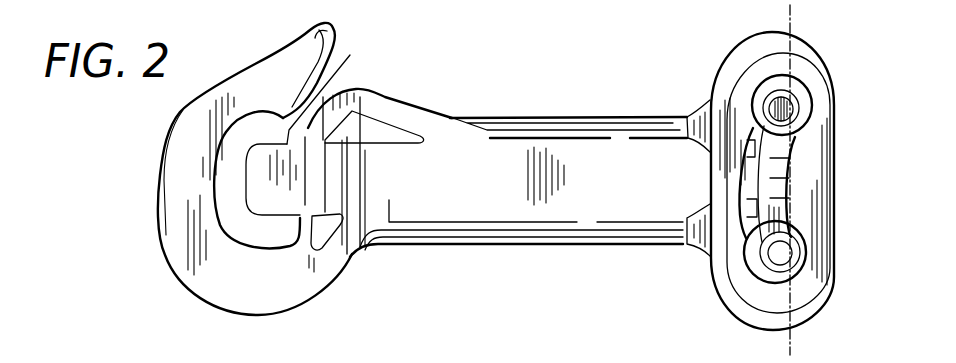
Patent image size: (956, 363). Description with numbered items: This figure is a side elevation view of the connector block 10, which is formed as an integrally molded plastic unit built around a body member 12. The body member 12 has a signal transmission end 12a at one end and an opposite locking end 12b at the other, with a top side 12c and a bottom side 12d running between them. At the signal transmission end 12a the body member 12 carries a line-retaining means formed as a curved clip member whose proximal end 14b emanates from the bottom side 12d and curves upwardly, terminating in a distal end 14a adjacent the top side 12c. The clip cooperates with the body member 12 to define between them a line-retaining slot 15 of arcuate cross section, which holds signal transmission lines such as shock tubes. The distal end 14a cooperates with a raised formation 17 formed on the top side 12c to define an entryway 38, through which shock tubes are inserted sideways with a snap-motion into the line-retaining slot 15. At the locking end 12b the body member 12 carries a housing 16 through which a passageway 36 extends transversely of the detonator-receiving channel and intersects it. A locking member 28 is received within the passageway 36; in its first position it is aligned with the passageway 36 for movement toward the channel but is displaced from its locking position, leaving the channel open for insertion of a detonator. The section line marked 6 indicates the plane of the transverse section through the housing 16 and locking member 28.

The connector block 10 is at (551, 263).
The body member 12 is at (479, 104).
The signal transmission end 12a is at (149, 227).
The locking end 12b is at (719, 314).
The top side 12c is at (593, 117).
The bottom side 12d is at (583, 246).
The distal end 14a is at (315, 40).
The proximal end 14b is at (308, 268).
The line-retaining slot 15 is at (231, 190).
The housing 16 is at (808, 46).
The raised formation 17 is at (360, 90).
The locking member 28 is at (763, 185).
The passageway 36 is at (808, 110).
The entryway 38 is at (397, 40).
The section line 6- 6 is at (813, 341).